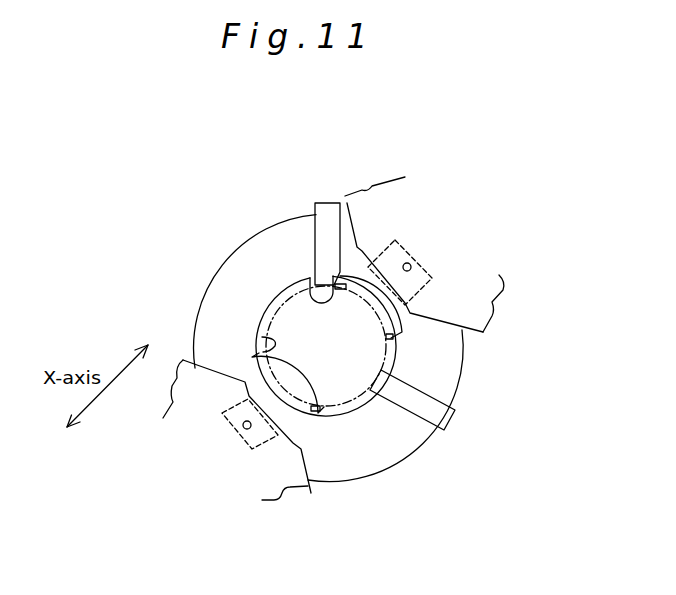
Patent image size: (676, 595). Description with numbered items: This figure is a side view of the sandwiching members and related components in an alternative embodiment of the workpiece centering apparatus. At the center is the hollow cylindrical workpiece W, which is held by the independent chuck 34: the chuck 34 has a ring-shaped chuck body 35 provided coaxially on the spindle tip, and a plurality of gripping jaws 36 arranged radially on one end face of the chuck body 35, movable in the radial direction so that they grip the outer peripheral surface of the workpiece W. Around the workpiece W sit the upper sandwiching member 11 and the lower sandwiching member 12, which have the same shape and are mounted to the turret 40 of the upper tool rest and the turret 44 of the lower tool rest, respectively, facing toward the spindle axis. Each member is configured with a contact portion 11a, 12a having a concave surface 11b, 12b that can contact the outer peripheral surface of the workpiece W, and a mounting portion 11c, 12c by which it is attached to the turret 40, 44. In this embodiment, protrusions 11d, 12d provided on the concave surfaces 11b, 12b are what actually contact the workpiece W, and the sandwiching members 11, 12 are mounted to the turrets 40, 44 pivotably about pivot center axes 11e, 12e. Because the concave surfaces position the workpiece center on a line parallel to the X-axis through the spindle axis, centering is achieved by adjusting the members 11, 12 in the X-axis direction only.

The independent chuck 34 is at (235, 220).
The chuck body 35 is at (230, 267).
The gripping jaws 36 is at (327, 210).
The workpiece W is at (268, 325).
The upper sandwiching member 11 is at (414, 347).
The contact portion 11a is at (425, 313).
The concave surface 11b is at (350, 292).
The mounting portion 11c is at (409, 259).
The protrusion 11d is at (308, 290).
The pivot center axis 11e is at (407, 267).
The lower sandwiching member 12 is at (325, 430).
The contact portion 12a is at (240, 380).
The concave surface 12b is at (294, 400).
The mounting portion 12c is at (252, 436).
The protrusion 12d is at (262, 338).
The pivot center axis 12e is at (247, 425).
The turret 40 is at (472, 333).
The turret 44 is at (298, 463).